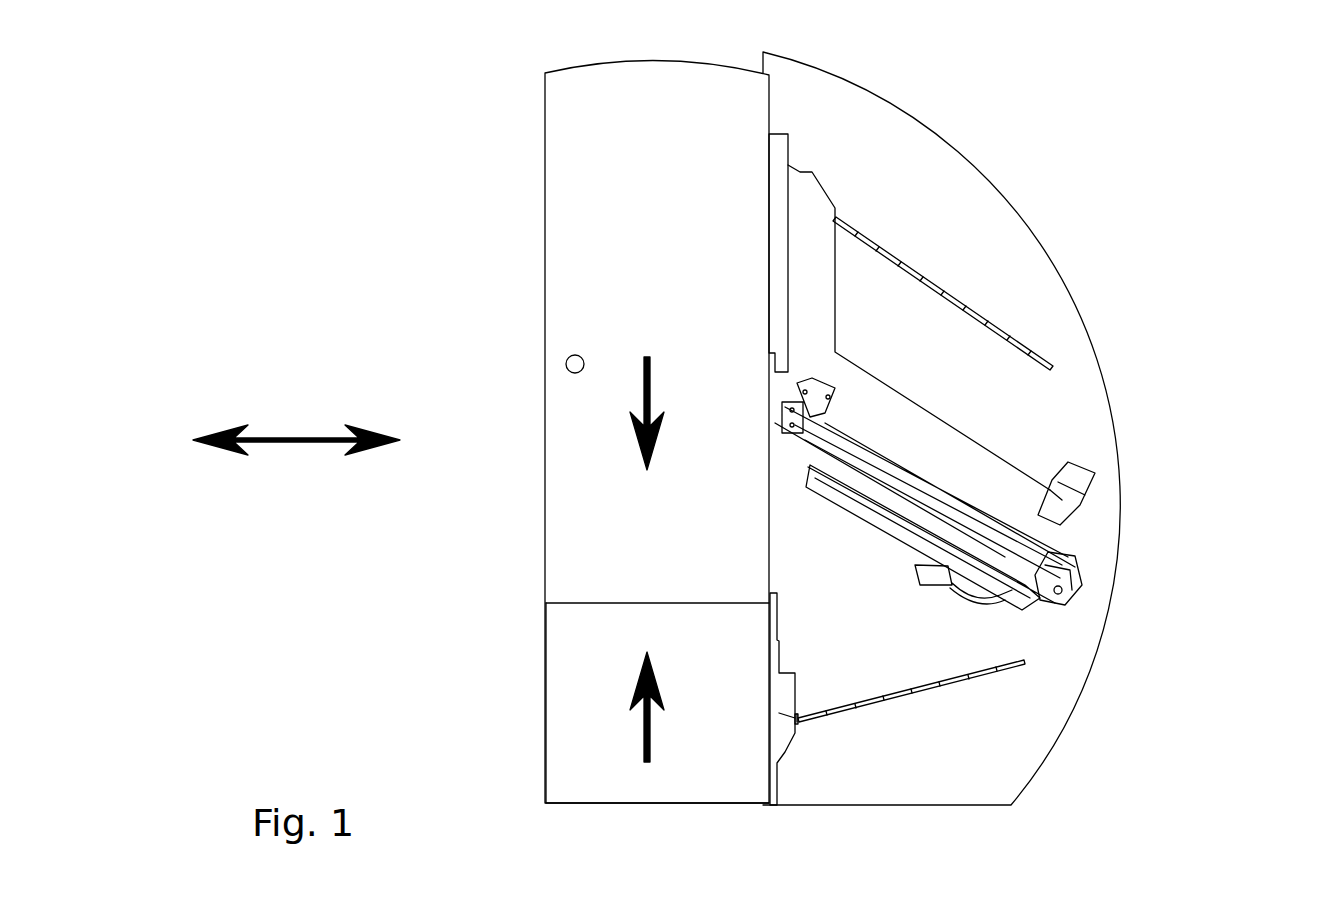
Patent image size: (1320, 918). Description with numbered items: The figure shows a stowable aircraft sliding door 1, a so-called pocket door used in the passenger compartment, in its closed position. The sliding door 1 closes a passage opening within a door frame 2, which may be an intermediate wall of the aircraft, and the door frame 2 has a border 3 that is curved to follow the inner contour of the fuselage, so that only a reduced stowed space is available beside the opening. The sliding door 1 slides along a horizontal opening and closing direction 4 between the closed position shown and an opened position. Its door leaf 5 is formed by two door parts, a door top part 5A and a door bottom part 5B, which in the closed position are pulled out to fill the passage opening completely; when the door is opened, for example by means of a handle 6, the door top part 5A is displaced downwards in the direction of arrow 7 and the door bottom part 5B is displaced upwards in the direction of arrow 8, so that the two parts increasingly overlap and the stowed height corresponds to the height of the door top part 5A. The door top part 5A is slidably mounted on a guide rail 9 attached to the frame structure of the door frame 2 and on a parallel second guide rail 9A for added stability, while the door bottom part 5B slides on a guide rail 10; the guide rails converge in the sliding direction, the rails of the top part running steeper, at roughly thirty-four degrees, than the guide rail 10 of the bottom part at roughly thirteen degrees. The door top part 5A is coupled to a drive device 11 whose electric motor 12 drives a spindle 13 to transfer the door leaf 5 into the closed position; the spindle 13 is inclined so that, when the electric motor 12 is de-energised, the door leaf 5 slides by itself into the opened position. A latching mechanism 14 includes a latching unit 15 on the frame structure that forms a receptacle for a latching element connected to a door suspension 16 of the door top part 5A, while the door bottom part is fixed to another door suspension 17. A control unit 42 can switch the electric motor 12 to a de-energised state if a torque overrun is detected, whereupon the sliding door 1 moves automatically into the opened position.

The sliding door 1 is at (255, 113).
The door frame 2 is at (989, 118).
The border 3 is at (1055, 260).
The opening and closing direction 4 is at (287, 447).
The door leaf 5 is at (568, 178).
The door top part 5A is at (553, 550).
The door bottom part 5B is at (550, 665).
The handle 6 is at (565, 362).
The arrow 7 is at (655, 400).
The arrow 8 is at (657, 722).
The guide rail 9 is at (1040, 350).
The second guide rail 9A is at (948, 478).
The guide rail 10 is at (937, 685).
The drive device 11 is at (1195, 604).
The electric motor 12 is at (1058, 596).
The spindle 13 is at (995, 540).
The latching mechanism 14 is at (1177, 409).
The latching unit 15 is at (1068, 514).
The door suspension 16 is at (780, 158).
The door suspension 17 is at (783, 750).
The control unit 42 is at (933, 562).